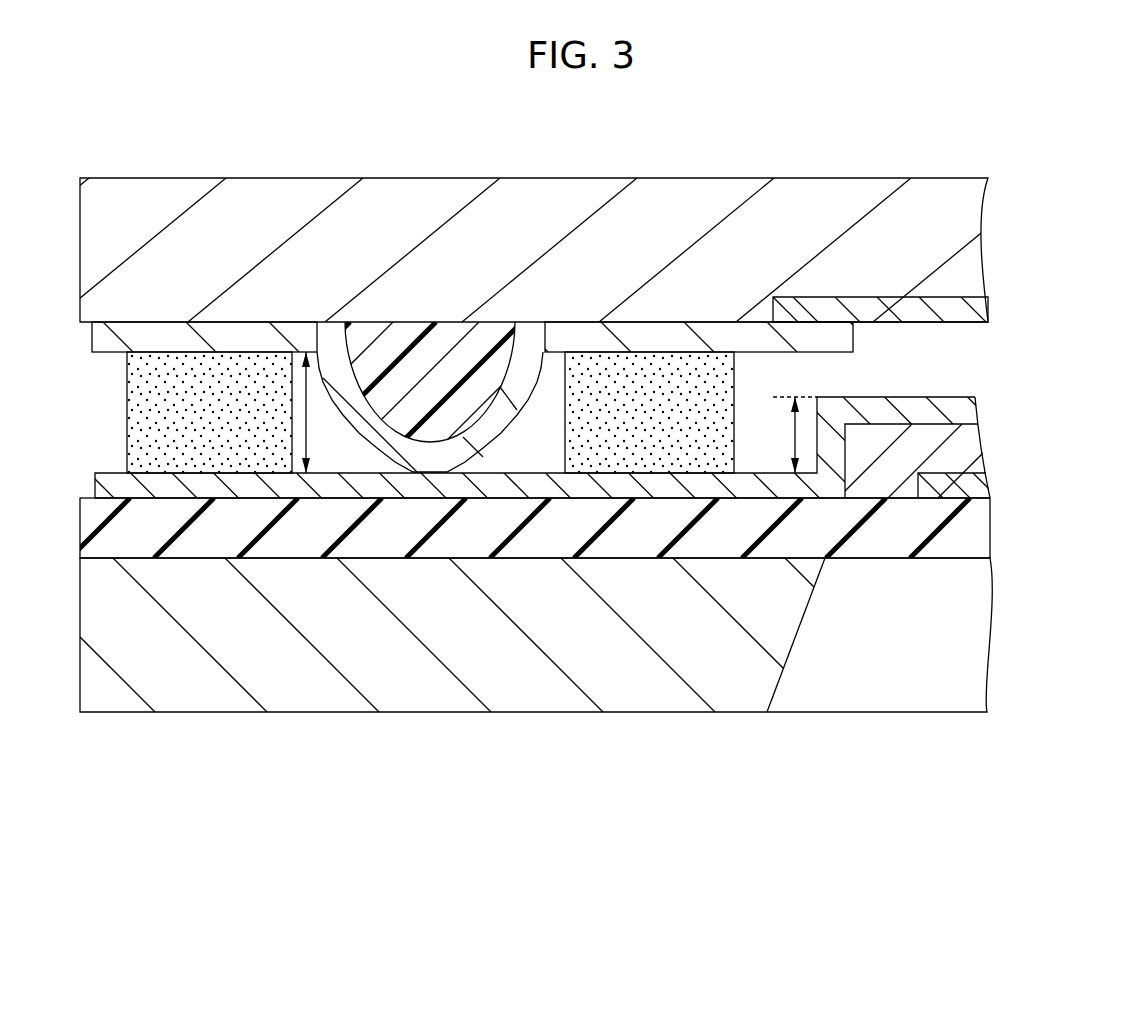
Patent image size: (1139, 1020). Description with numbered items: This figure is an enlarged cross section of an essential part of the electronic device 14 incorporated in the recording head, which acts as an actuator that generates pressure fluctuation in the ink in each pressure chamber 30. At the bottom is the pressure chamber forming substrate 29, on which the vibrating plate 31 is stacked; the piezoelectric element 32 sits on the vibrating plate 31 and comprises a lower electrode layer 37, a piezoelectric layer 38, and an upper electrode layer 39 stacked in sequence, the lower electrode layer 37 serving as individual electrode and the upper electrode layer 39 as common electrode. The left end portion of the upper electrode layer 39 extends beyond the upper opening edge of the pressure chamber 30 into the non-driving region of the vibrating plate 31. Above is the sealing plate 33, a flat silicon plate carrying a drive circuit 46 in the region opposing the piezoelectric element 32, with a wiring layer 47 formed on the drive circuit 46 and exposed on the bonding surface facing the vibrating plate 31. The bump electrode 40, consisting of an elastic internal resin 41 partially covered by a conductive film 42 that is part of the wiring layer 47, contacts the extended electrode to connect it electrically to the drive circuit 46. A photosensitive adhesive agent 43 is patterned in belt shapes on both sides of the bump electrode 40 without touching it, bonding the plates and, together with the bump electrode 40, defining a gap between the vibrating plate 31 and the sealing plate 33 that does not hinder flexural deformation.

The electronic device 14 is at (385, 124).
The pressure chamber forming substrate 29 is at (742, 690).
The pressure chamber 30 is at (955, 638).
The vibrating plate 31 is at (955, 532).
The piezoelectric element 32 is at (568, 449).
The sealing plate 33 is at (953, 220).
The lower electrode layer 37 is at (955, 490).
The piezoelectric layer 38 is at (955, 452).
The upper electrode layer 39 is at (955, 410).
The bump electrode 40 is at (392, 581).
The internal resin 41 is at (440, 420).
The conductive film 42 is at (385, 450).
The photosensitive adhesive agent 43 is at (210, 440).
The drive circuit 46 is at (953, 313).
The wiring layer 47 is at (838, 340).